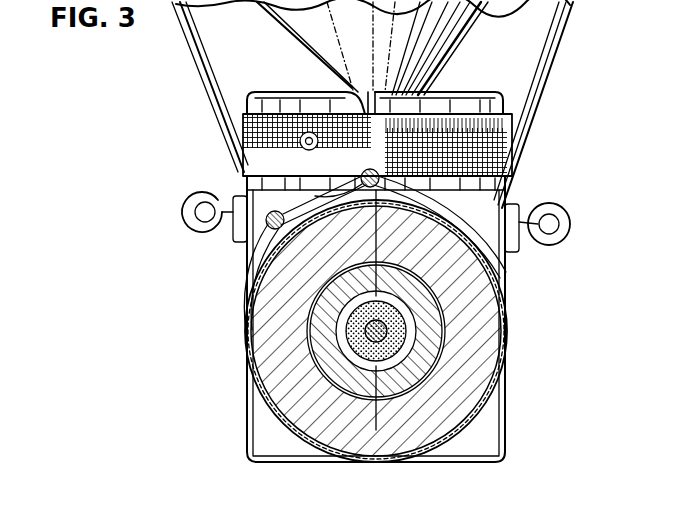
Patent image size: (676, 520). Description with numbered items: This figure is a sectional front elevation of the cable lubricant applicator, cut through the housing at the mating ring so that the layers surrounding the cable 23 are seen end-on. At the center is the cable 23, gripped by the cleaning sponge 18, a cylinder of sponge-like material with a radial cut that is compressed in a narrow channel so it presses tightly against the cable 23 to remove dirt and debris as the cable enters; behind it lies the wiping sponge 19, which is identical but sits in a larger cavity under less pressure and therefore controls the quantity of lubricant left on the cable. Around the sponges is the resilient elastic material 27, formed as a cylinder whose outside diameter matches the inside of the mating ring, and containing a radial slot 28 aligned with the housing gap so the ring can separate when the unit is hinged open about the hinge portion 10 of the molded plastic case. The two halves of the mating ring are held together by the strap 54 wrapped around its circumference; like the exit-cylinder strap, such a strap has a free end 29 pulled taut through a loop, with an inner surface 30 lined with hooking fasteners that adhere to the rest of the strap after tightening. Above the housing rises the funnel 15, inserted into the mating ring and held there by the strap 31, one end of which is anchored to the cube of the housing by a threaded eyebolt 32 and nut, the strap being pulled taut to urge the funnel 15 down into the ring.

The hinge portion 10 is at (376, 464).
The funnel 15 is at (470, 28).
The cleaning sponge 18 is at (345, 342).
The wiping sponge 19 is at (345, 370).
The cable 23 is at (365, 329).
The resilient elastic material 27 is at (490, 290).
The radial slot 28 is at (357, 92).
The free end 29 is at (497, 326).
The inner surface 30 is at (483, 179).
The strap 31 is at (207, 98).
The threaded eyebolt 32 is at (184, 211).
The strap 54 is at (503, 147).